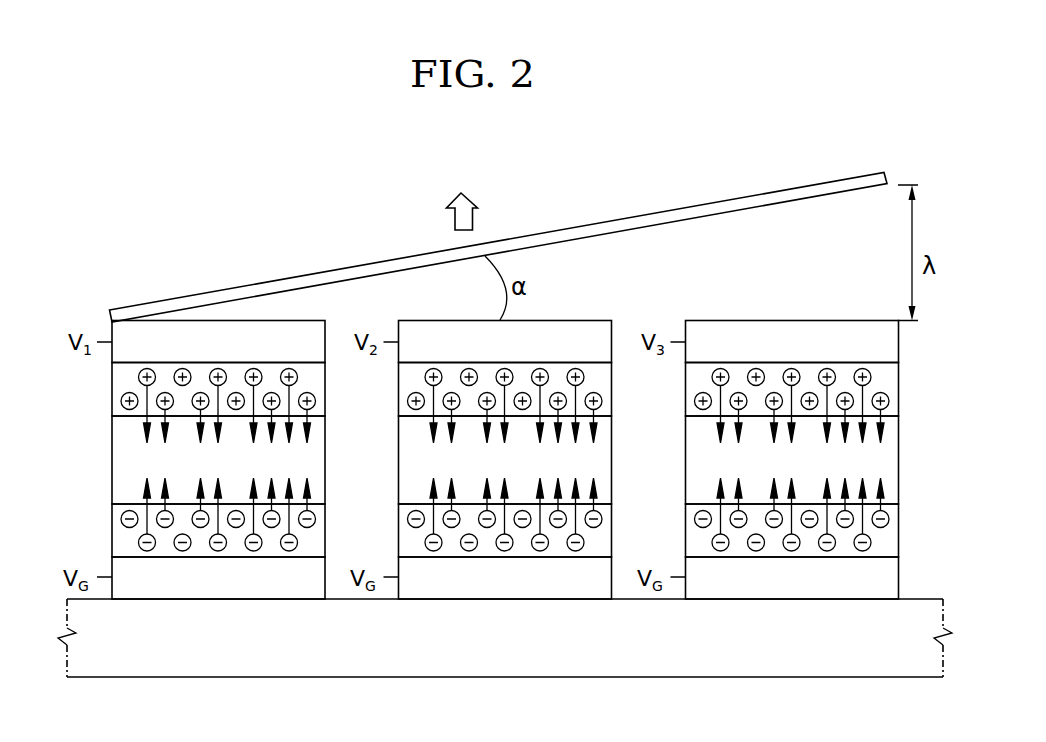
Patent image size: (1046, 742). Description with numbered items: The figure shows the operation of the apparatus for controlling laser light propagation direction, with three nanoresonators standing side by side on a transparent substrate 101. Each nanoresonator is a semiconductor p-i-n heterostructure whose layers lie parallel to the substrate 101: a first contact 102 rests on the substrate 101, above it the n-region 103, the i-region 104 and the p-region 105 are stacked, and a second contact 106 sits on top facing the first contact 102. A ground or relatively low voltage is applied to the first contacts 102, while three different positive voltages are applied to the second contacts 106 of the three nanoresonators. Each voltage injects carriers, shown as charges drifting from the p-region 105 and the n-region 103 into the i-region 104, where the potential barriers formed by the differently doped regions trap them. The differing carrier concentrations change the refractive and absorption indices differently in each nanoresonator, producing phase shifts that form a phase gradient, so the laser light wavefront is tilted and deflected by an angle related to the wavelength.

The substrate 101 is at (128, 646).
The first contact 102 is at (810, 590).
The n-region 103 is at (475, 530).
The i-region 104 is at (810, 470).
The p-region 105 is at (475, 390).
The second contact 106 is at (810, 356).